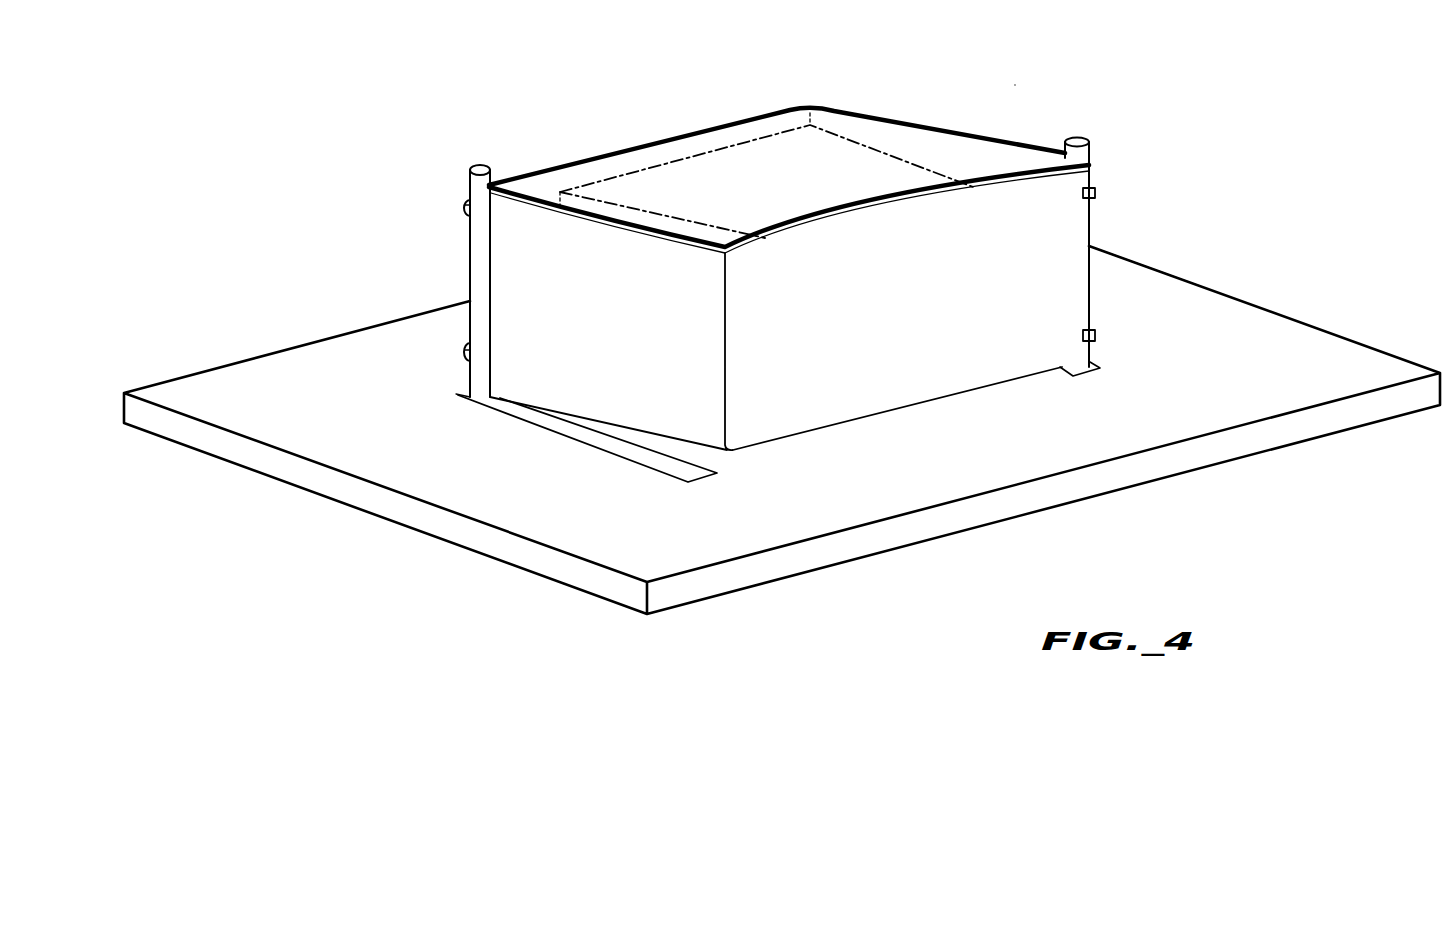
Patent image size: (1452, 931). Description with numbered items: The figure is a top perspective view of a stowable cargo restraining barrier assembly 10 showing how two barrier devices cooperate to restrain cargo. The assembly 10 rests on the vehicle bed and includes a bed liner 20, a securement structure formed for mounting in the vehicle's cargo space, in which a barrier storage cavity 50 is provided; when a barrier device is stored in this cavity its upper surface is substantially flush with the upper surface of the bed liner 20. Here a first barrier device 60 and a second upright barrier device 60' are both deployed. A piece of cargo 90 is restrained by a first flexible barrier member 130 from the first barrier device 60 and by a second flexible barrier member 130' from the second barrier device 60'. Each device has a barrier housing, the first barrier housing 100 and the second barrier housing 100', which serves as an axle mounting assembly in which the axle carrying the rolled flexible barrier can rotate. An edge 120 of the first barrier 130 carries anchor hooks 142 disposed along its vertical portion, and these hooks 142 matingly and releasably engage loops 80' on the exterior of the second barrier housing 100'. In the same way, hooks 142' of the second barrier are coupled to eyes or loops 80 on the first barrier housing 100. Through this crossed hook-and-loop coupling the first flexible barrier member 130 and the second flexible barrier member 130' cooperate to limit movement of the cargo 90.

The cargo restraining barrier assembly 10 is at (932, 103).
The bed liner 20 is at (1291, 340).
The barrier storage cavity 50 is at (668, 460).
The first barrier device 60 is at (424, 270).
The second upright barrier device 60' is at (1146, 243).
The coupling eye or loop 80 is at (432, 304).
The loop 80' is at (1128, 290).
The cargo 90 is at (757, 150).
The first barrier housing 100 is at (442, 267).
The second barrier housing 100' is at (1117, 240).
The edge of barrier member 120 is at (1075, 313).
The first flexible barrier member 130 is at (776, 357).
The second flexible barrier member 130' is at (789, 175).
The anchor hook 142 is at (1145, 271).
The hook 142' is at (414, 288).